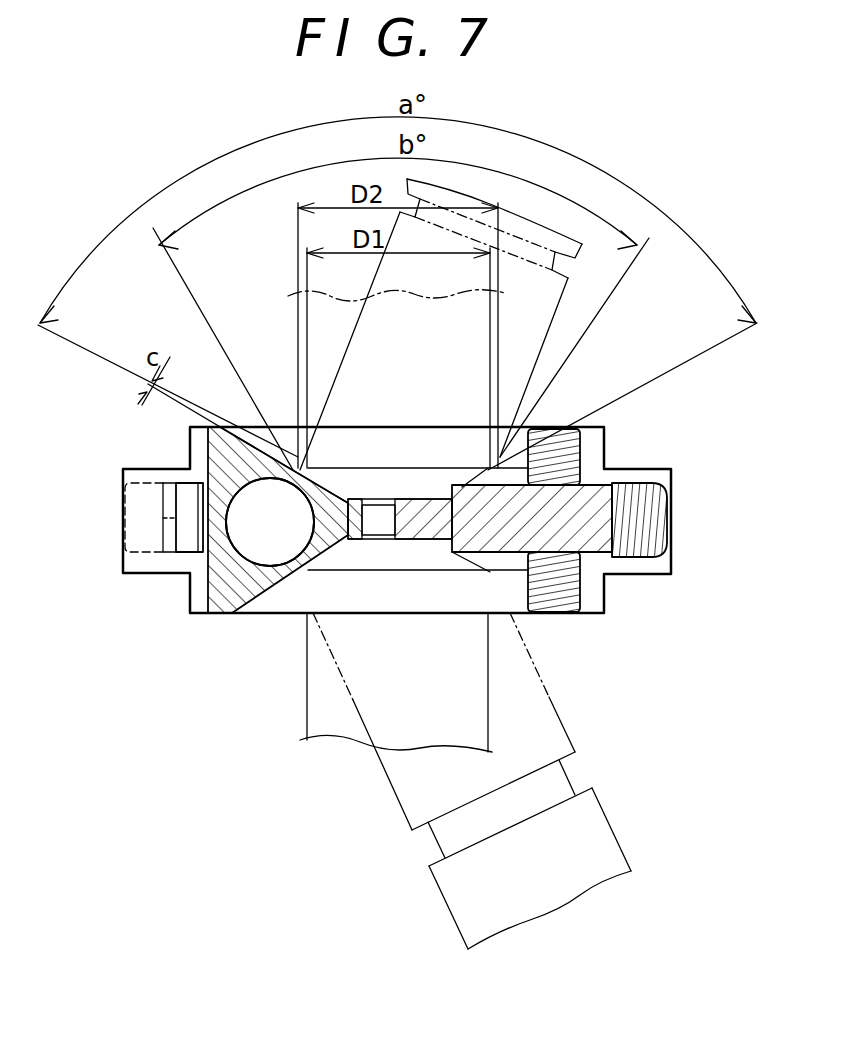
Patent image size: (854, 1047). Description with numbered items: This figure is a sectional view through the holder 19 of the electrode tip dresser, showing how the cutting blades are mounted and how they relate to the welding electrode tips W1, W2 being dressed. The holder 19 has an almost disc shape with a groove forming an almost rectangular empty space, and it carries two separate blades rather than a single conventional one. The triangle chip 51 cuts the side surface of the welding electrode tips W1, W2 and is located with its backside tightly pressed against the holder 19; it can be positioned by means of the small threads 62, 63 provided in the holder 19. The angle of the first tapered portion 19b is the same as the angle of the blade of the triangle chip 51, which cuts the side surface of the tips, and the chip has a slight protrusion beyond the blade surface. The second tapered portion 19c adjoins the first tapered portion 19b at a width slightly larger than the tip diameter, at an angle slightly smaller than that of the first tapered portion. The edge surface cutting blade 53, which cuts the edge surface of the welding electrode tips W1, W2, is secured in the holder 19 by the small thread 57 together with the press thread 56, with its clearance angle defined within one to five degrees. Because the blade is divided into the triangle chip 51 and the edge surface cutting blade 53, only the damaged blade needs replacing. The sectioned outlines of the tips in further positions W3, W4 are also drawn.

The holder 19 is at (152, 580).
The first tapered portion 19b is at (343, 548).
The second tapered portion 19c is at (297, 568).
The triangle chip 51 is at (233, 590).
The edge surface cutting blade 53 is at (421, 505).
The press thread 56 is at (754, 448).
The small thread 57 is at (578, 455).
The small thread 62 is at (190, 493).
The small thread 63 is at (140, 523).
The welding electrode tip W1 is at (302, 330).
The welding electrode tip W2 is at (342, 738).
The wrench tilted upward W3 is at (550, 293).
The wrench tilted downward W4 is at (568, 703).